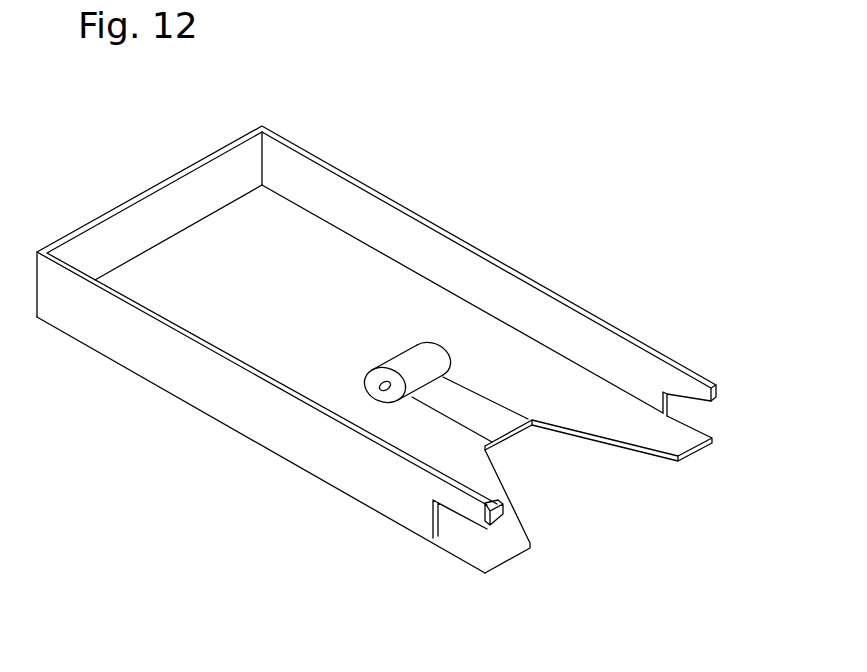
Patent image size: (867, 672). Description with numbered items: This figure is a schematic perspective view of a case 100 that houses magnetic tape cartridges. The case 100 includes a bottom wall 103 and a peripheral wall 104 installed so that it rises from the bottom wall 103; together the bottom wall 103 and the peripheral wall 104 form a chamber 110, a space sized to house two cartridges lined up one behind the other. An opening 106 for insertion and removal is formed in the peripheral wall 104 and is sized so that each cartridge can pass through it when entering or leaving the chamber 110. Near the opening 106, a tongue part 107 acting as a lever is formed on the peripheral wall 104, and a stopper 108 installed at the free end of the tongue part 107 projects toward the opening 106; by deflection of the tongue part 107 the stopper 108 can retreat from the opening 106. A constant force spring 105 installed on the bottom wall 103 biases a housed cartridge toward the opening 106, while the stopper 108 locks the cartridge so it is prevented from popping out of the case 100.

The case 100 is at (427, 140).
The bottom wall 103 is at (207, 325).
The peripheral wall 104 is at (145, 218).
The constant force spring 105 is at (402, 367).
The opening 106 is at (583, 470).
The tongue part 107 is at (473, 508).
The stopper 108 is at (493, 510).
The chamber 110 is at (487, 340).